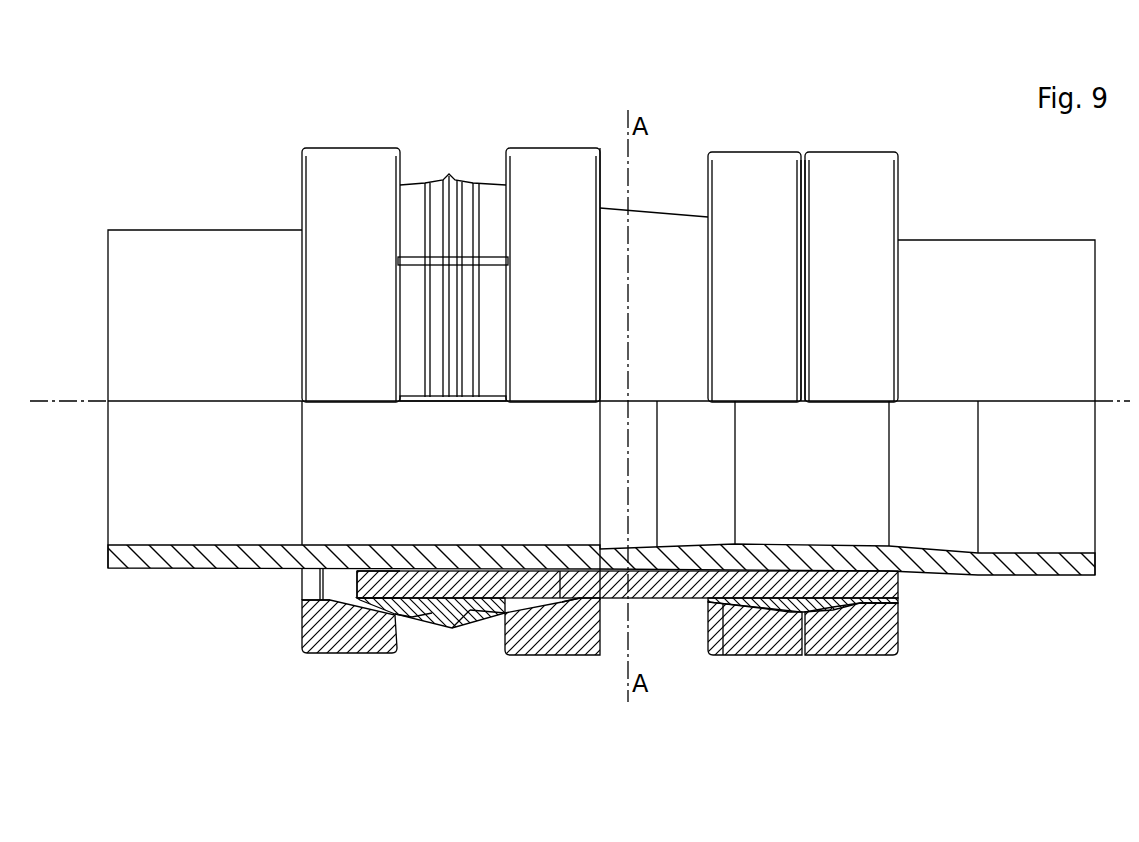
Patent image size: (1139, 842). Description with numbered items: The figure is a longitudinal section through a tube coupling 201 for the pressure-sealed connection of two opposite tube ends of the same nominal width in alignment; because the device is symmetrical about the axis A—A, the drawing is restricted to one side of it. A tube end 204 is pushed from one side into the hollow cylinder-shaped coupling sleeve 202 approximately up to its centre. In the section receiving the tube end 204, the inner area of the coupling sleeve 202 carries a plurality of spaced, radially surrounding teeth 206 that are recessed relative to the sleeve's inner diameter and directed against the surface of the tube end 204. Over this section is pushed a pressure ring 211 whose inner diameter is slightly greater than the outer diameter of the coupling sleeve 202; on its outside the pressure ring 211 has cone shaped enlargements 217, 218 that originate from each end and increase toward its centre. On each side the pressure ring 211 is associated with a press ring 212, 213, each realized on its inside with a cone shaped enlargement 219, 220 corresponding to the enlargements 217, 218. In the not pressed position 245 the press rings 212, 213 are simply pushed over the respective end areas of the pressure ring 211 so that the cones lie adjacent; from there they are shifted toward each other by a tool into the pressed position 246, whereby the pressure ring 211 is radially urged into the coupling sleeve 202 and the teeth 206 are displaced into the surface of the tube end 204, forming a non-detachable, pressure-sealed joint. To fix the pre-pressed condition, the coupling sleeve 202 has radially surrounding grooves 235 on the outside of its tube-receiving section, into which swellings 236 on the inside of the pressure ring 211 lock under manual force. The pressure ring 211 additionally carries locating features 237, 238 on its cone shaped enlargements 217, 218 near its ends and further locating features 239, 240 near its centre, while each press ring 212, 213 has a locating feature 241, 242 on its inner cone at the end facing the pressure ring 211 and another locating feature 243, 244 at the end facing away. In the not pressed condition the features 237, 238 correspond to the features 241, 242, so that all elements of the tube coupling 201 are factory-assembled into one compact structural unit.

The tube coupling 201 is at (623, 369).
The coupling sleeve 202 is at (672, 585).
The tube end 204 is at (150, 556).
The teeth 206 is at (458, 578).
The pressure ring 211 is at (452, 626).
The press ring 212 is at (310, 653).
The press ring 213 is at (563, 655).
The cone shaped enlargement 217 is at (412, 617).
The cone shaped enlargement 218 is at (505, 615).
The cone shaped enlargement 219 is at (335, 605).
The cone shaped enlargement 220 is at (561, 592).
The grooves 235 is at (397, 575).
The swellings 236 is at (382, 533).
The locating feature 237 is at (358, 592).
The locating feature 238 is at (528, 578).
The locating feature 239 is at (432, 612).
The locating feature 240 is at (470, 607).
The locating feature 241 is at (805, 776).
The locating feature 242 is at (882, 776).
The locating feature 243 is at (322, 600).
The locating feature 244 is at (578, 603).
The not pressed position 245 is at (449, 128).
The pressed position 246 is at (802, 133).